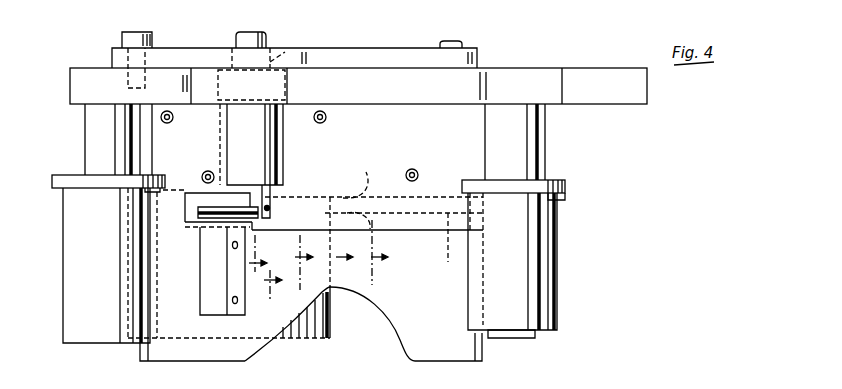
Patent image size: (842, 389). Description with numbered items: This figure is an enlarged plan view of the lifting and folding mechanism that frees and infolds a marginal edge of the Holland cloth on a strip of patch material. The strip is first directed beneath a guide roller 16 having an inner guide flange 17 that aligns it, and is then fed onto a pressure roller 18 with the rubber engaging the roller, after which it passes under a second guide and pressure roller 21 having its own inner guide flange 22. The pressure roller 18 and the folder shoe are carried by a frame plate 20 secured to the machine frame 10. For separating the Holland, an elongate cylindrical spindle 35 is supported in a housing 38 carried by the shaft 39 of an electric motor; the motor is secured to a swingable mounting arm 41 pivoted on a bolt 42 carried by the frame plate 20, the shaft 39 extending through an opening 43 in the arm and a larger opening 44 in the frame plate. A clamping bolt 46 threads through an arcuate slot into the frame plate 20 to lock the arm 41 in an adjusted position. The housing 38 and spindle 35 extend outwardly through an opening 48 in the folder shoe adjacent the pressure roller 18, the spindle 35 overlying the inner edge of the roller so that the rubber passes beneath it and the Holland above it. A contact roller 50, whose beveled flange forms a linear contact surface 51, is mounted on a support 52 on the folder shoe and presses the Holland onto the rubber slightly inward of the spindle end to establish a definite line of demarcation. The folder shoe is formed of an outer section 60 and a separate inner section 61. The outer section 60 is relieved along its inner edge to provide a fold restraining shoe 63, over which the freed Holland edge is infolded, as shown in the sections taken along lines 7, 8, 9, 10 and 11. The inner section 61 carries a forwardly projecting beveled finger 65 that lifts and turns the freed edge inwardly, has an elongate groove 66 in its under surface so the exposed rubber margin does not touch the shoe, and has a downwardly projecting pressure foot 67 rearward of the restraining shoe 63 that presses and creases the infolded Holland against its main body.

The section line 7 is at (258, 263).
The section line 8 is at (273, 289).
The section line 9 is at (304, 262).
The machine frame 10 is at (341, 242).
The section line 11 is at (377, 252).
The guide roller 16 is at (70, 283).
The inner guide flange 17 is at (58, 172).
The pressure roller 18 is at (309, 338).
The frame plate 20 is at (512, 76).
The second guide and pressure roller 21 is at (540, 280).
The inner guide flange 22 is at (568, 190).
The spindle 35 is at (250, 197).
The housing 38 is at (235, 122).
The shaft 39 is at (268, 46).
The swingable mounting arm 41 is at (350, 58).
The bolt 42 is at (465, 43).
The opening 43 is at (285, 52).
The opening 44 is at (288, 85).
The clamping bolt 46 is at (155, 46).
The opening 48 is at (294, 124).
The contact roller 50 is at (199, 248).
The contact surface 51 is at (186, 225).
The support 52 is at (210, 282).
The outer section 60 is at (405, 323).
The inner section 61 is at (434, 173).
The fold restraining shoe 63 is at (300, 230).
The finger 65 is at (271, 207).
The groove 66 is at (357, 192).
The pressure foot 67 is at (449, 232).